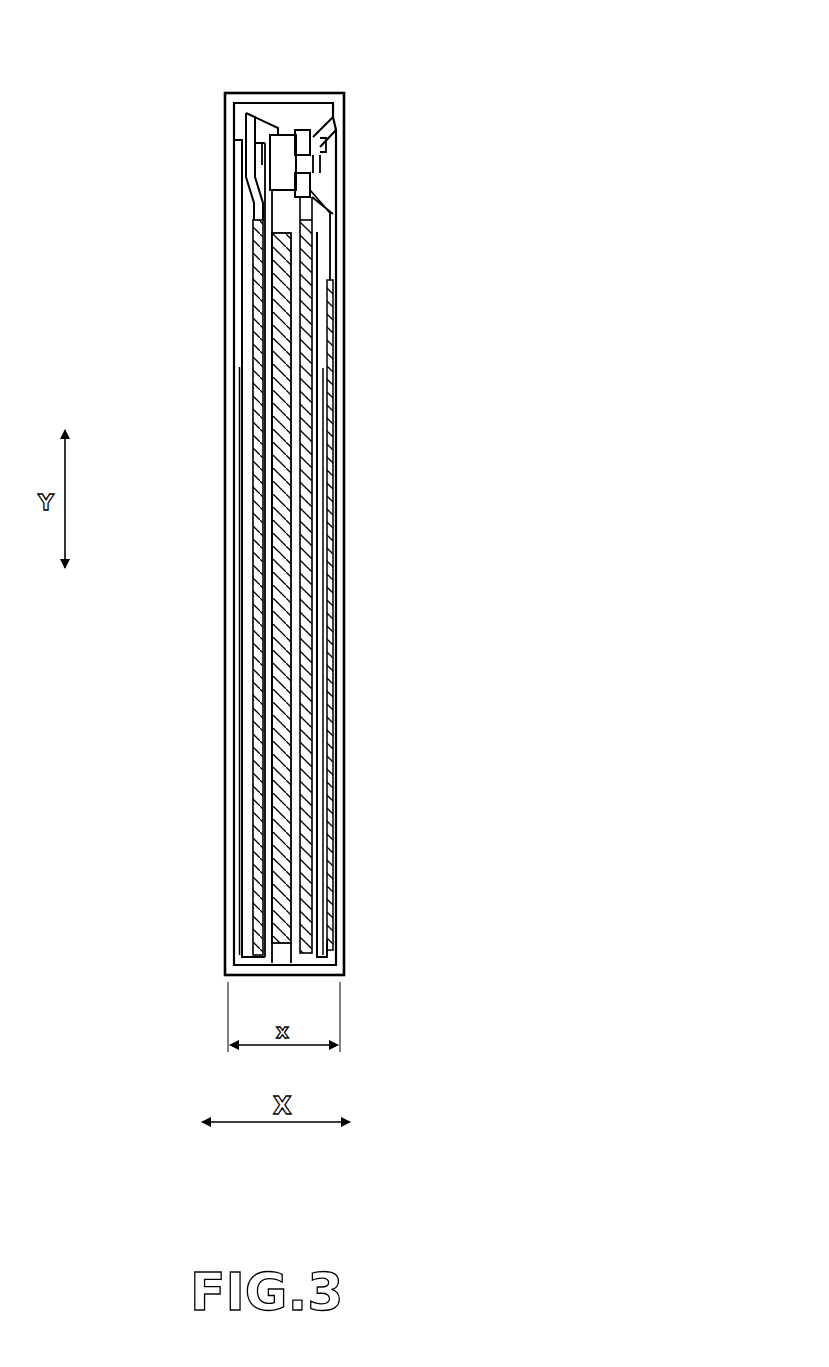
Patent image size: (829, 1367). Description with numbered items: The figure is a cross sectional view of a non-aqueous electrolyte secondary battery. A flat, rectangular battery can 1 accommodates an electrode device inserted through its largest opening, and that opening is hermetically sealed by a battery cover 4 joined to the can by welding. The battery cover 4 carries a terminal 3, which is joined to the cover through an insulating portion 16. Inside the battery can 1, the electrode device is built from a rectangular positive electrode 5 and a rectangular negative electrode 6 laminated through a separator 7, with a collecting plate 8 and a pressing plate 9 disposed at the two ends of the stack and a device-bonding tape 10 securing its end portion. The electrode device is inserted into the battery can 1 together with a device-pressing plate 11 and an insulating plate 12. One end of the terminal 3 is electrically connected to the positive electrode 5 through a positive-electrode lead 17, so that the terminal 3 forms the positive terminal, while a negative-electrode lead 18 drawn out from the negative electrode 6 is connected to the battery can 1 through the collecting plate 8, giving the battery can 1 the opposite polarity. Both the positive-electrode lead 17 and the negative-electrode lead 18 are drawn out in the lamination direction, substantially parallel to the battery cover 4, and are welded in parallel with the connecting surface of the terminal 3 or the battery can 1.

The battery can 1 is at (228, 595).
The terminal 3 is at (340, 157).
The battery cover 4 is at (336, 267).
The positive electrode 5 is at (290, 795).
The negative electrode 6 is at (265, 878).
The separator 7 is at (300, 885).
The collecting plate 8 is at (240, 352).
The pressing plate 9 is at (318, 352).
The device-bonding tape 10 is at (243, 490).
The device-pressing plate 11 is at (330, 513).
The insulating plate 12 is at (261, 142).
The insulating portion 16 is at (335, 133).
The positive-electrode lead 17 is at (262, 158).
The negative-electrode lead 18 is at (240, 212).